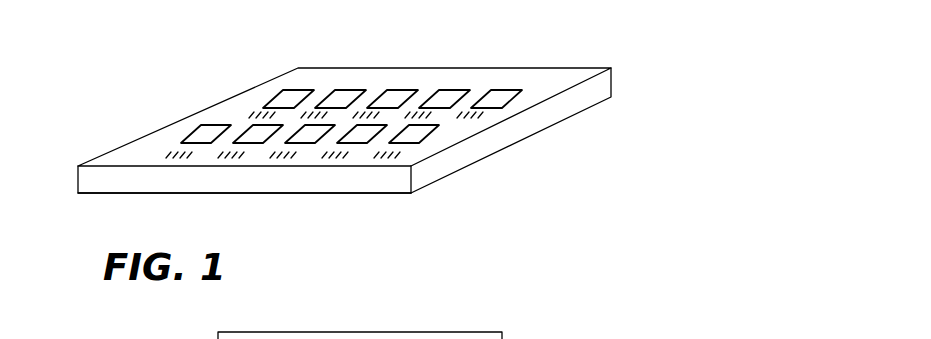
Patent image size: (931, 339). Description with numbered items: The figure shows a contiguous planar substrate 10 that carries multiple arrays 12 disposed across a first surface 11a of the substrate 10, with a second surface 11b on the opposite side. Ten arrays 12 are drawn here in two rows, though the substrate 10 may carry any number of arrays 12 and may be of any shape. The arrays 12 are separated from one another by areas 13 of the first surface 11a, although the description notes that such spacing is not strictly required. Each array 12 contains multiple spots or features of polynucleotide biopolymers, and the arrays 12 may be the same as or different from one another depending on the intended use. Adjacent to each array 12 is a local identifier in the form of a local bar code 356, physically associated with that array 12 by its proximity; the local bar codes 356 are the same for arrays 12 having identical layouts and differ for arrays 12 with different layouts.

The substrate 10 is at (488, 157).
The first surface 11a is at (572, 72).
The second (bottom) surface of substrate 11b is at (113, 195).
The arrays 12 is at (215, 133).
The areas 13 is at (380, 145).
The local bar code 356 is at (248, 117).